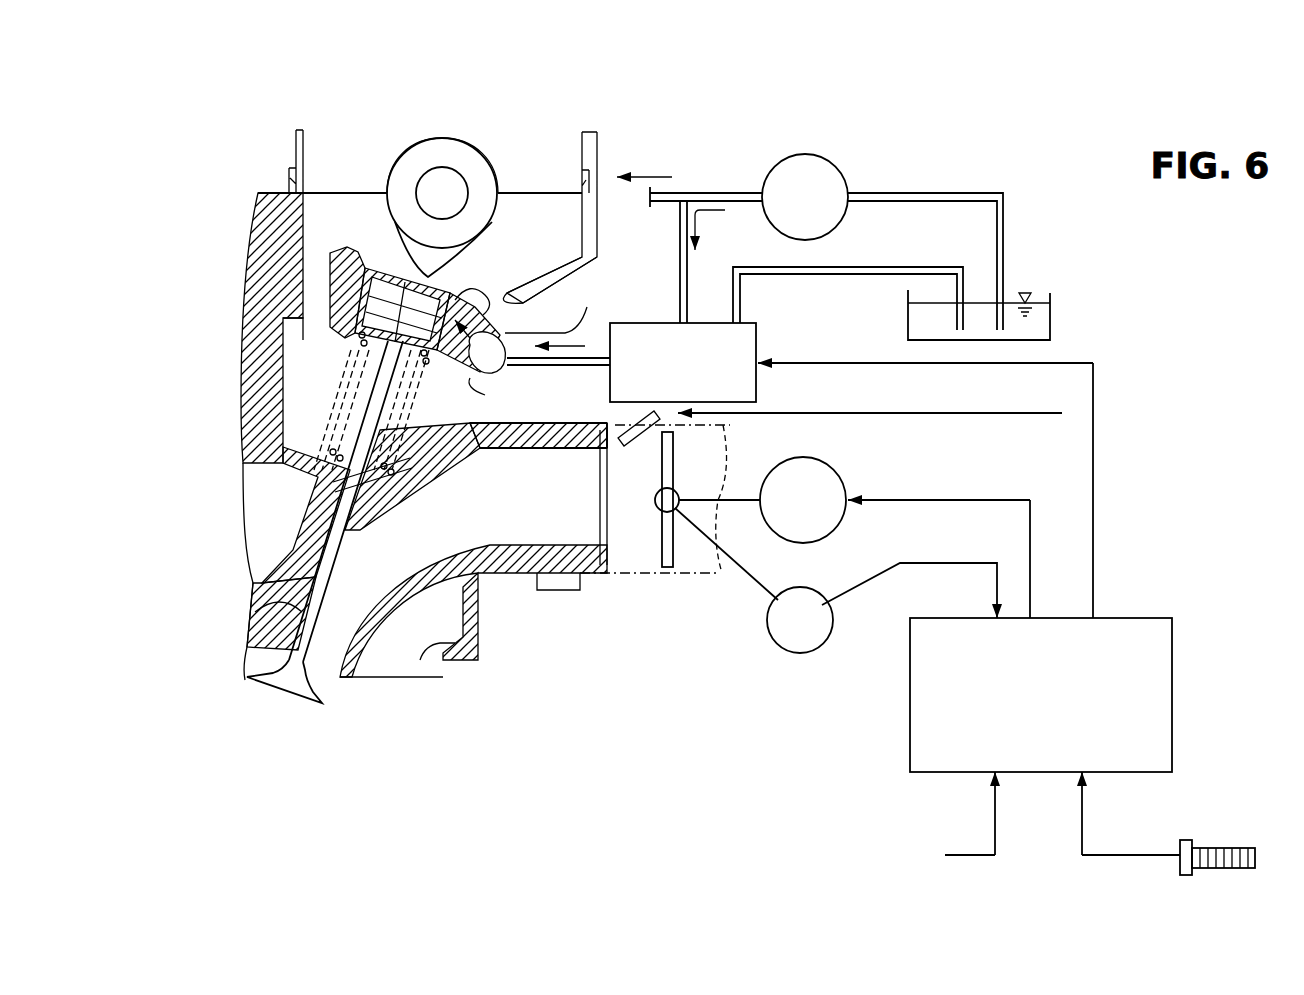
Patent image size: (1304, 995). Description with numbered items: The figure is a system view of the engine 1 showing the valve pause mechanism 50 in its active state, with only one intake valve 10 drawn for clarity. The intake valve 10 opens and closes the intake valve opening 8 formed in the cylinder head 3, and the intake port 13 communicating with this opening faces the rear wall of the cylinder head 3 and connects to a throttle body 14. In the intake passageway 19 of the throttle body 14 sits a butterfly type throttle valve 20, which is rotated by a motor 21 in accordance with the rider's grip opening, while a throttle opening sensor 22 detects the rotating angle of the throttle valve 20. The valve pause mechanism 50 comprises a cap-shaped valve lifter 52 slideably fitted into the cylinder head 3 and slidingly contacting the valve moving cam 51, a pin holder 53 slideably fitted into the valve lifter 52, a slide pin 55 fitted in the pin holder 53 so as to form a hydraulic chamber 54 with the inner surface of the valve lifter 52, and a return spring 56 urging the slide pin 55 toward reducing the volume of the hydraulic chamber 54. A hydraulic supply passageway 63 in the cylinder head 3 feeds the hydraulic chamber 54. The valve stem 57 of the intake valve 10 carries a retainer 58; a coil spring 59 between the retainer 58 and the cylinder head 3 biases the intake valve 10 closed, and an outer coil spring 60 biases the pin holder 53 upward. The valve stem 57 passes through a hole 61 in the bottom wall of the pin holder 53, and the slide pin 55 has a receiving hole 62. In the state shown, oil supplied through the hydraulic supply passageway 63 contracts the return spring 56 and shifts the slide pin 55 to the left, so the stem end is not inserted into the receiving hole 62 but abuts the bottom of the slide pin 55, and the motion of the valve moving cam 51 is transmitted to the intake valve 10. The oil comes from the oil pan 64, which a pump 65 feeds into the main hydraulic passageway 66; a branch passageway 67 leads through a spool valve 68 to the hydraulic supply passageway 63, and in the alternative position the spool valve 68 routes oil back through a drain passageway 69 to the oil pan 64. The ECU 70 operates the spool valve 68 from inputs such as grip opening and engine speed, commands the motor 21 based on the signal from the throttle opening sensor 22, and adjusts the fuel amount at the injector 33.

The engine 1 is at (172, 397).
The cylinder head 3 is at (258, 265).
The intake valve opening 8 is at (318, 675).
The intake valve 10 is at (262, 606).
The intake port 13 is at (606, 590).
The throttle body 14 is at (680, 580).
The intake passageway 19 is at (634, 540).
The throttle valve 20 is at (676, 550).
The motor 21 is at (822, 465).
The throttle opening sensor 22 is at (798, 655).
The injector 33 is at (625, 420).
The valve pause mechanism 50 is at (400, 128).
The valve moving cam 51 is at (470, 142).
The valve lifter 52 is at (447, 283).
The pin holder 53 is at (412, 262).
The hydraulic chamber 54 is at (505, 372).
The slide pin 55 is at (480, 287).
The return spring 56 is at (352, 289).
The valve stem 57 is at (395, 512).
The retainer 58 is at (497, 455).
The coil spring 59 is at (340, 395).
The coil spring 60 is at (345, 350).
The hole 61 is at (470, 378).
The receiving hole 62 is at (430, 275).
The hydraulic supply passageway 63 is at (563, 308).
The oil pan 64 is at (1050, 312).
The pump 65 is at (820, 155).
The main hydraulic passageway 66 is at (940, 193).
The branch passageway 67 is at (680, 252).
The spool valve 68 is at (758, 332).
The drain passageway 69 is at (882, 267).
The ECU 70 is at (1172, 668).